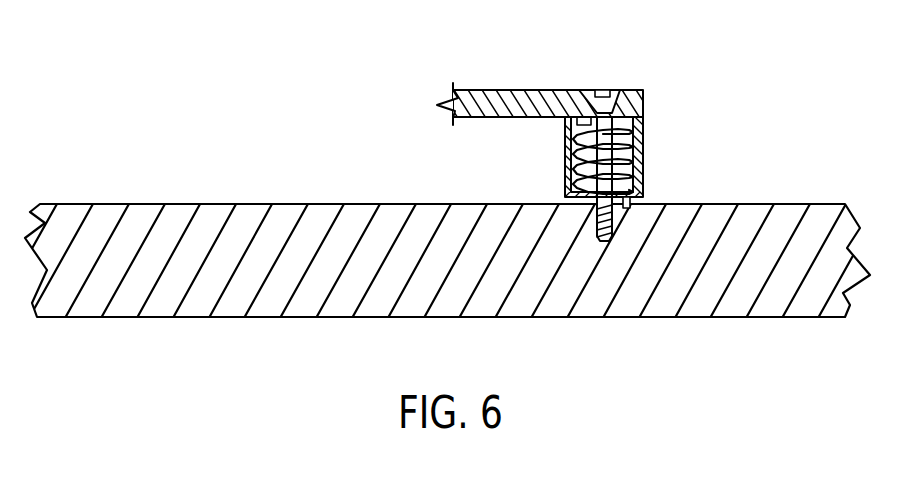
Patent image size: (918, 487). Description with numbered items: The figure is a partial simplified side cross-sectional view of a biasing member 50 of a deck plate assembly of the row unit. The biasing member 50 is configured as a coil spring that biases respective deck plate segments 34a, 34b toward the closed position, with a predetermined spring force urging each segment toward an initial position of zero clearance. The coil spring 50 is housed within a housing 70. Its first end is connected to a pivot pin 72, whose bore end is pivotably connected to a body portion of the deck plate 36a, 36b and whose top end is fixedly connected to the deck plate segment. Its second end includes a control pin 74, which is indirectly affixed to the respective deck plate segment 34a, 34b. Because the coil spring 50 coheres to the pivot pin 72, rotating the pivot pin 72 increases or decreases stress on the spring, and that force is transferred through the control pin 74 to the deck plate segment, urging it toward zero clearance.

The deck plate segment 34a is at (523, 65).
The deck plate segment 34b is at (466, 90).
The deck plate 36a is at (446, 287).
The deck plate 36b is at (160, 283).
The biasing member 50 is at (588, 244).
The housing 70 is at (565, 160).
The pivot pin 72 is at (602, 240).
The control pin 74 is at (588, 90).